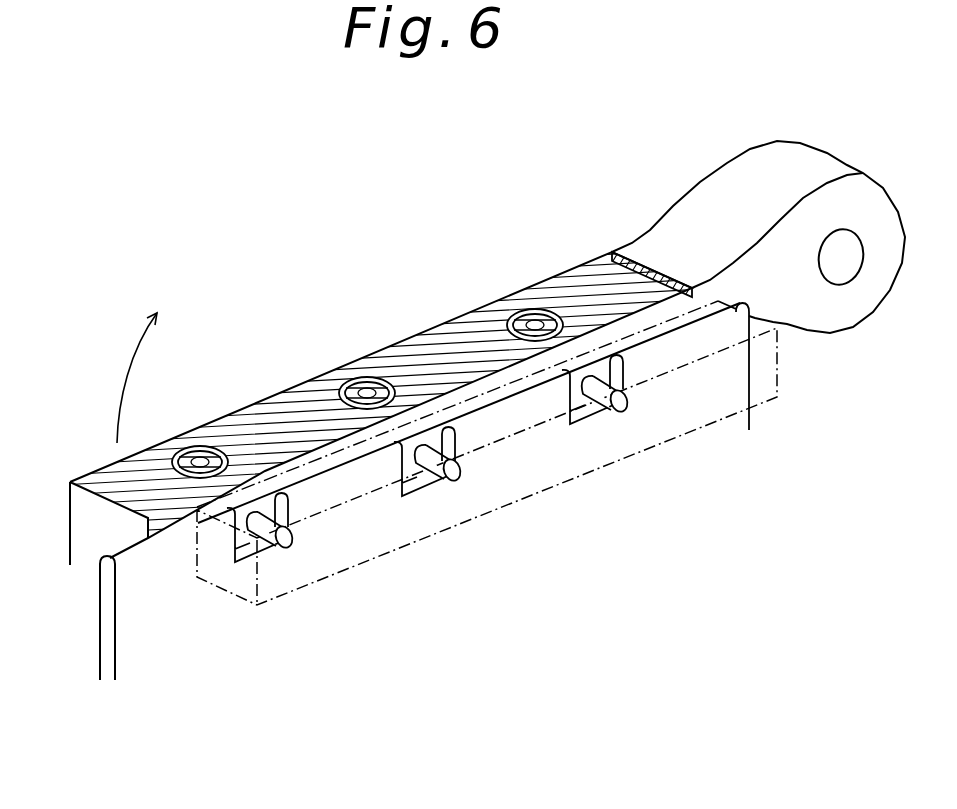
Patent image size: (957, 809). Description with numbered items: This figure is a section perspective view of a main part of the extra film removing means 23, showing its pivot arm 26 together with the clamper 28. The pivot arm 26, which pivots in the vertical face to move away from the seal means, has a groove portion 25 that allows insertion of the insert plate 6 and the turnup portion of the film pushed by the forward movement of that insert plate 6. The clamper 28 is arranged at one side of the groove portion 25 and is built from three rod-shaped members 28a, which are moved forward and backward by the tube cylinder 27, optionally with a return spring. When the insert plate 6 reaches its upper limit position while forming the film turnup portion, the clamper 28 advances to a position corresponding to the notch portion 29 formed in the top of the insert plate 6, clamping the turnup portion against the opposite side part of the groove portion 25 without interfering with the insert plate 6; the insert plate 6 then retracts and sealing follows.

The insert plate 6 is at (103, 607).
The extra film removing means 23 is at (478, 276).
The groove portion 25 is at (253, 493).
The pivot arm 26 is at (405, 345).
The tube cylinder 27 is at (203, 450).
The clamper 28 is at (737, 513).
The rod-shaped members 28a is at (292, 546).
The notch portion 29 is at (245, 536).